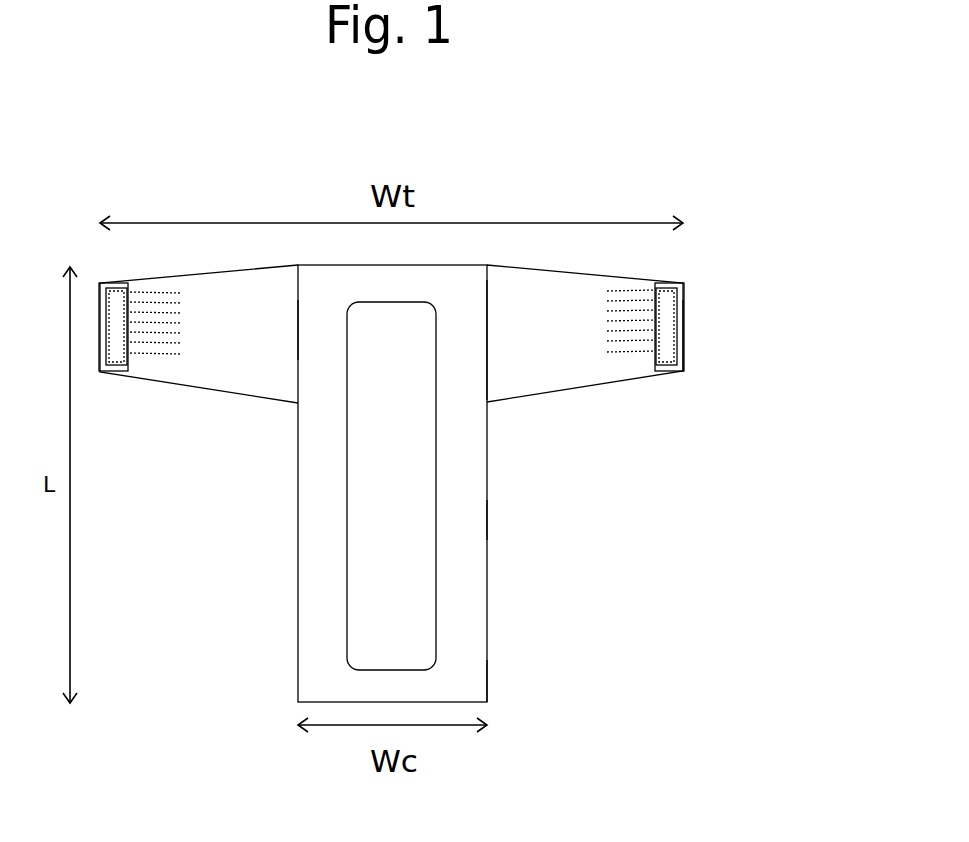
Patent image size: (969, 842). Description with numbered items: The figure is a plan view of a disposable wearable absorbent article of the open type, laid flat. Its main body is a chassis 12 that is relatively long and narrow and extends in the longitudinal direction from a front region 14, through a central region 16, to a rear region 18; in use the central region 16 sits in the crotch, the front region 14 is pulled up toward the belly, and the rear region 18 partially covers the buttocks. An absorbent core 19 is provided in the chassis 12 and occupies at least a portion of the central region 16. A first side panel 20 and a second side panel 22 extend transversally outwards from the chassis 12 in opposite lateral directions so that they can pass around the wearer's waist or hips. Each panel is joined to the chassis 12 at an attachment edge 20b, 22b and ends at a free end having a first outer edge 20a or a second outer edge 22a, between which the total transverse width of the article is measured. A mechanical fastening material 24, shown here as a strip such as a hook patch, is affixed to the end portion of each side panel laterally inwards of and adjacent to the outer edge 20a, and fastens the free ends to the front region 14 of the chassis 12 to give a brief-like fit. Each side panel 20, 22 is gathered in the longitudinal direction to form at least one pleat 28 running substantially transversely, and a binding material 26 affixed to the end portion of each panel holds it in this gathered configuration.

The chassis 12 is at (475, 562).
The front region 14 is at (495, 675).
The central region 16 is at (510, 518).
The rear region 18 is at (497, 303).
The absorbent core 19 is at (390, 532).
The first side panel 20 is at (572, 363).
The first outer edge 20a is at (685, 367).
The attachment edge 20b is at (487, 380).
The second side panel 22 is at (237, 368).
The second outer edge 22a is at (100, 347).
The attachment edge 22b is at (297, 328).
The mechanical fastening material 24 is at (677, 303).
The binding material 26 is at (668, 328).
The pleat 28 is at (637, 347).